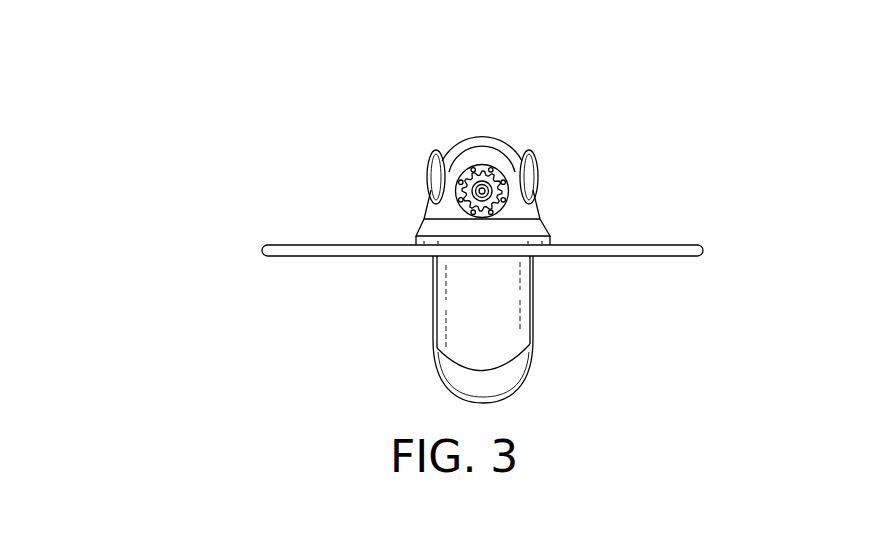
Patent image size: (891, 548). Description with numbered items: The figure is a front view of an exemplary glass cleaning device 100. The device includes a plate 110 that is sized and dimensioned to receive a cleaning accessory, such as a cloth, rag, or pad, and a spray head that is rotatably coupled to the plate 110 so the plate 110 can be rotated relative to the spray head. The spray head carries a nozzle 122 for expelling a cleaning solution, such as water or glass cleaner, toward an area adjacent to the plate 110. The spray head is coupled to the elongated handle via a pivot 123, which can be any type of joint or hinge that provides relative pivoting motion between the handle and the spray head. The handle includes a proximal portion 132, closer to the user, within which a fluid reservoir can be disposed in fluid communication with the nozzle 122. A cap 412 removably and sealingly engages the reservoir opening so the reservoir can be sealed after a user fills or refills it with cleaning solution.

The glass cleaning device 100 is at (175, 51).
The plate 110 is at (704, 253).
The nozzle 122 is at (508, 190).
The pivot 123 is at (427, 172).
The proximal portion 132 is at (433, 292).
The cap 412 is at (523, 382).